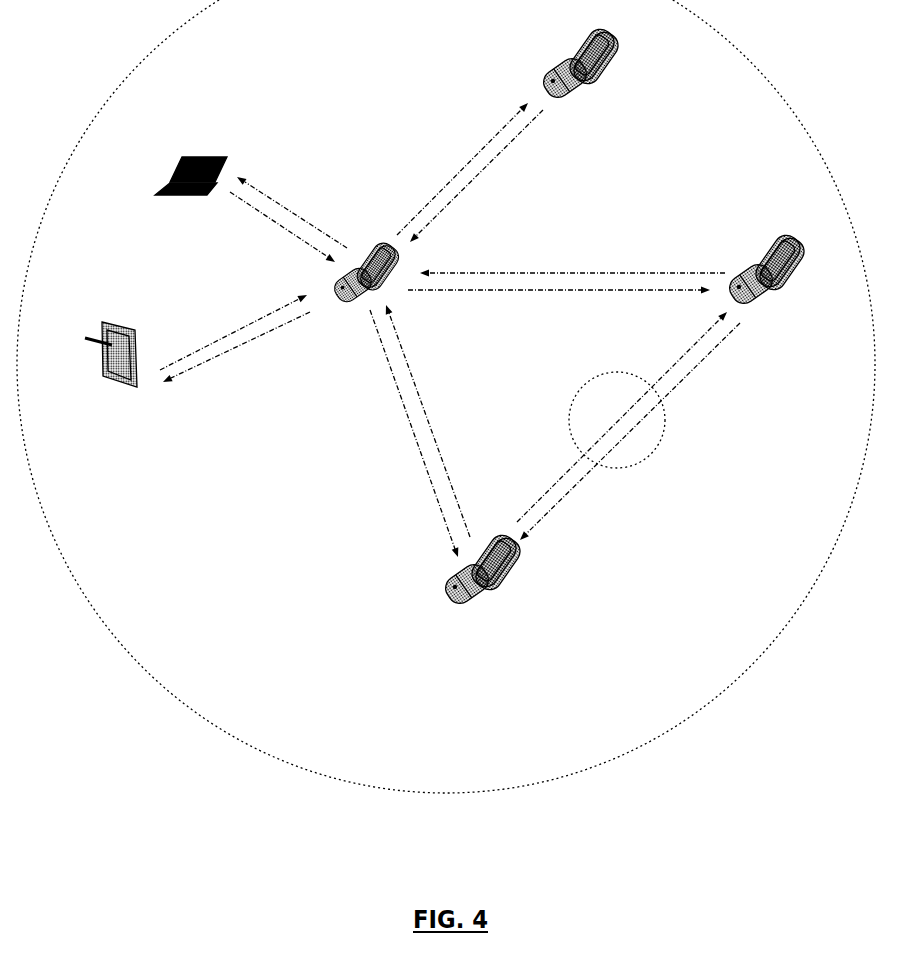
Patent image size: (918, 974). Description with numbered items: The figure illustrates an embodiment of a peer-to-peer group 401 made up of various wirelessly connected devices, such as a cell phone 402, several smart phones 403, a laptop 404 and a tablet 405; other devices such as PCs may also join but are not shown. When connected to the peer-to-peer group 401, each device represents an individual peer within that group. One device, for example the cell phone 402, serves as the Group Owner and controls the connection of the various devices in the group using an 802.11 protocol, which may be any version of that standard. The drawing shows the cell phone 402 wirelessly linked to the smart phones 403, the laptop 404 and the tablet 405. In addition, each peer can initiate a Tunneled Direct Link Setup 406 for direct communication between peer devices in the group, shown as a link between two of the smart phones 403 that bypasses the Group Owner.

The peer-to-peer group 401 is at (460, 743).
The cell phone 402 is at (383, 293).
The smart phone 403 is at (598, 90).
The laptop 404 is at (167, 182).
The tablet 405 is at (125, 388).
The Tunneled Direct Link Setup 406 is at (665, 433).